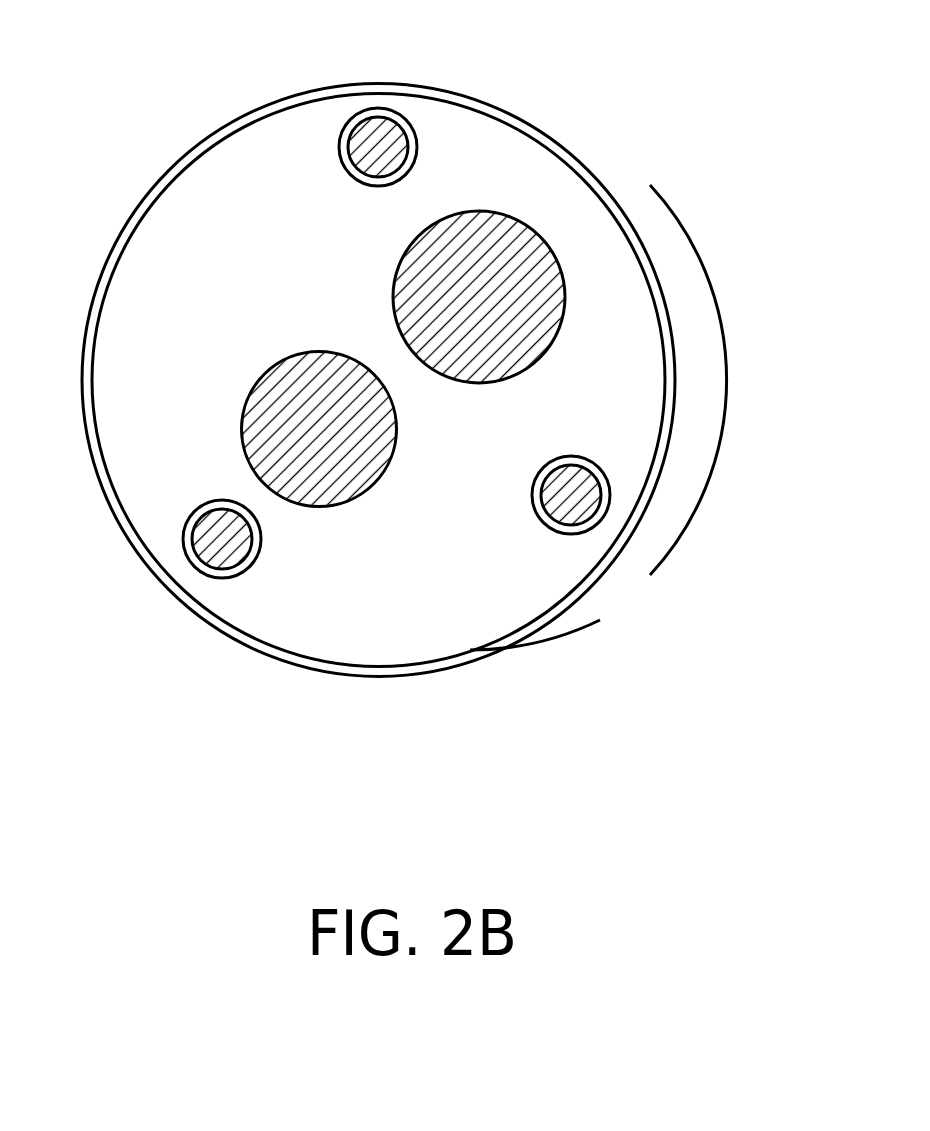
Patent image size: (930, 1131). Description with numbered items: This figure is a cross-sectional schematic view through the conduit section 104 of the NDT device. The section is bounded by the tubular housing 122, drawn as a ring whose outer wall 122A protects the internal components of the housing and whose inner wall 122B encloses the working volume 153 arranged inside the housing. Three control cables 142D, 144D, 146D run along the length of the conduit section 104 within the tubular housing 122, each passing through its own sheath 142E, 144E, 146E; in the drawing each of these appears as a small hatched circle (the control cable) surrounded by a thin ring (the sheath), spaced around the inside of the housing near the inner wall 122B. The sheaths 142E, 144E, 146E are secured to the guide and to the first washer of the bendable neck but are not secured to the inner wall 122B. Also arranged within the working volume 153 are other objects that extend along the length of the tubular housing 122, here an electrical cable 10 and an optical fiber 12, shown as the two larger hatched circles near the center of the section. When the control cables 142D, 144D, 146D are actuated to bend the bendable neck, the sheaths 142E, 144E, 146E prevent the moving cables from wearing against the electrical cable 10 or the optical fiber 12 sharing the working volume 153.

The working volume 153 is at (422, 352).
The conduit section 104 is at (658, 275).
The tubular housing 122 is at (673, 342).
The outer wall 122A is at (675, 417).
The inner wall 122B is at (535, 613).
The electrical cables 10 is at (463, 311).
The optical fibers 12 is at (302, 443).
The sheath 146E is at (393, 108).
The control cable 146D is at (410, 157).
The sheath 144E is at (187, 527).
The control cable 144D is at (202, 565).
The sheath 142E is at (600, 475).
The control cable 142D is at (577, 525).